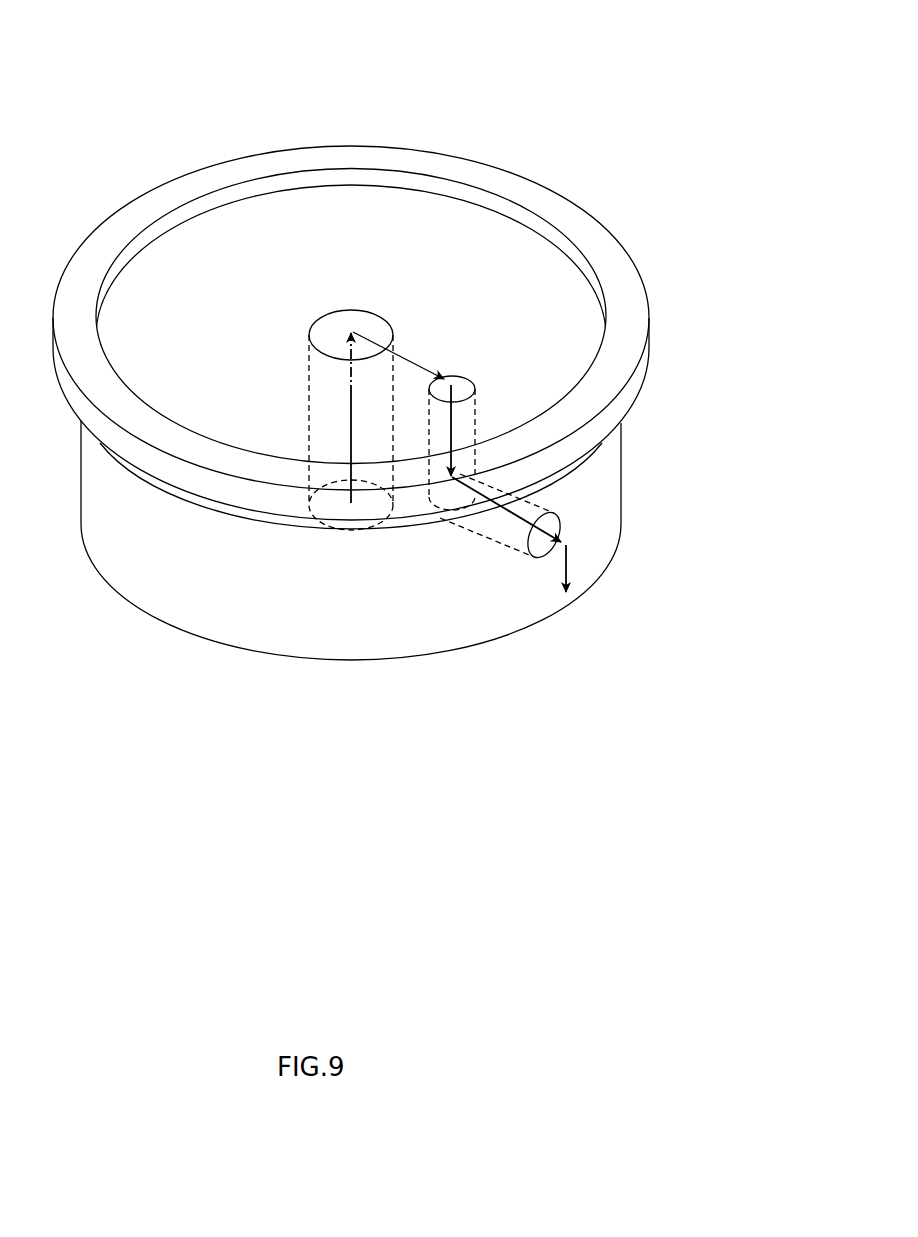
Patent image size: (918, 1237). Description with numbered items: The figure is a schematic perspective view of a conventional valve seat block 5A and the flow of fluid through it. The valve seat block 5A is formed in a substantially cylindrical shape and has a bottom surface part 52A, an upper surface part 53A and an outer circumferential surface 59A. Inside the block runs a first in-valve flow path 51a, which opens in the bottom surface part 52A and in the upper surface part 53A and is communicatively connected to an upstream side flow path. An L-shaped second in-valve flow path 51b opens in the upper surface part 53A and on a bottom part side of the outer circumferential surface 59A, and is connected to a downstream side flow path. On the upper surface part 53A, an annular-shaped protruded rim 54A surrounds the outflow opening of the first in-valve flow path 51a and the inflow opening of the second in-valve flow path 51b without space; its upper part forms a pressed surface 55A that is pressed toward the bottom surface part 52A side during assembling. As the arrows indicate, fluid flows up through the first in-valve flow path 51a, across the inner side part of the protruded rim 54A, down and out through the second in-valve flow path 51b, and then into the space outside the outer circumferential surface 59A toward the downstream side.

The valve seat block 5A is at (123, 114).
The first in-valve flow path 51a is at (340, 407).
The second in-valve flow path 51b is at (482, 520).
The bottom surface part 52A is at (358, 682).
The upper surface part 53A is at (374, 130).
The annular-shaped protruded rim 54A is at (468, 158).
The pressed surface 55A is at (648, 336).
The outer circumferential surface 59A is at (659, 445).